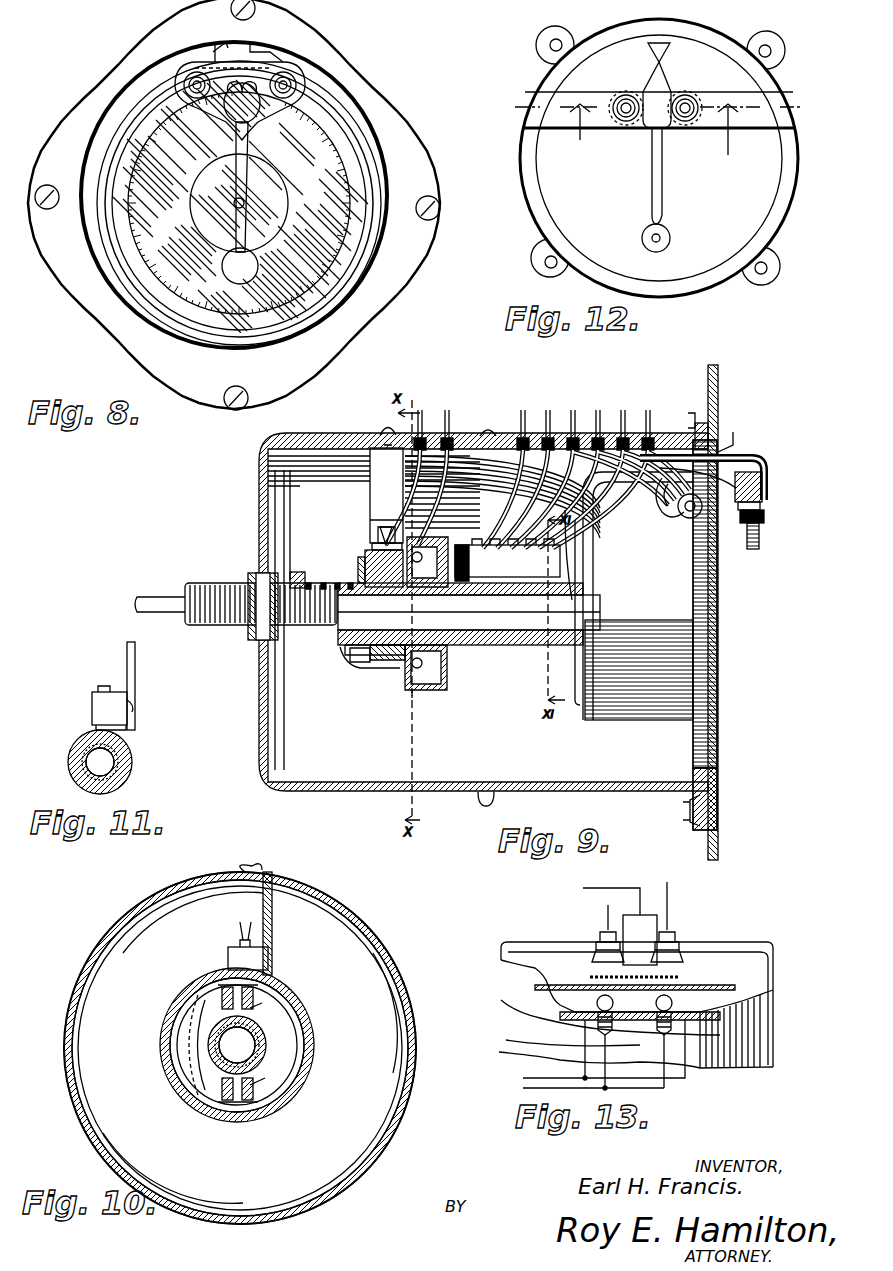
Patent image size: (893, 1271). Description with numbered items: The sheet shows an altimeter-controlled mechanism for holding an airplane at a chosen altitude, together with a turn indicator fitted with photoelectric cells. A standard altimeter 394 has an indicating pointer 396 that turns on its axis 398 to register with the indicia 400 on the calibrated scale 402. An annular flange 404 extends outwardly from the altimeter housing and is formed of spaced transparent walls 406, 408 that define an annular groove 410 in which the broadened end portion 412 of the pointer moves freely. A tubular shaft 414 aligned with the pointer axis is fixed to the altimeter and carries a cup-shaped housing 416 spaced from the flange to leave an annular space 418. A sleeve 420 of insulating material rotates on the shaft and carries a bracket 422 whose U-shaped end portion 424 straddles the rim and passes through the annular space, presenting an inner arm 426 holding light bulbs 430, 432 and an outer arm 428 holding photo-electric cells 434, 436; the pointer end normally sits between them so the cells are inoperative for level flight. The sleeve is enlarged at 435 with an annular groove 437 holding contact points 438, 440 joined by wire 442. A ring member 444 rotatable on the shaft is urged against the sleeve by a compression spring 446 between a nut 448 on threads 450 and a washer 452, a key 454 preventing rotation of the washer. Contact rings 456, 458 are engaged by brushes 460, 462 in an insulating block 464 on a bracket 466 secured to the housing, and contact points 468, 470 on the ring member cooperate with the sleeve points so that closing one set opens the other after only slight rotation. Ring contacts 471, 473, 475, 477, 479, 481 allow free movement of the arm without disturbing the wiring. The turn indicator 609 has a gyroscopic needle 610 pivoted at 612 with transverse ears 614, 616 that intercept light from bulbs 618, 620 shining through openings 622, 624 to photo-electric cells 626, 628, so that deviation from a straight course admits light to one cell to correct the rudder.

In FIG. 8, the altimeter 394 is at (276, 243).
In FIG. 9, the altimeter 394 is at (638, 596).
In FIG. 8, the indicating pointer 396 is at (246, 214).
In FIG. 9, the indicating pointer 396 is at (718, 600).
In FIG. 8, the axis 398 is at (239, 203).
In FIG. 9, the axis 398 is at (722, 620).
In FIG. 8, the indicia 400 is at (239, 203).
In FIG. 8, the calibrated scale 402 is at (345, 222).
In FIG. 8, the annular flange 404 is at (198, 340).
In FIG. 9, the annular flange 404 is at (718, 768).
In FIG. 9, the transparent wall 406 is at (692, 518).
In FIG. 9, the transparent wall 408 is at (759, 537).
In FIG. 9, the annular groove 410 is at (748, 470).
In FIG. 8, the broadened end portion 412 is at (272, 60).
In FIG. 9, the broadened end portion 412 is at (762, 485).
In FIG. 9, the tubular shaft 414 is at (562, 612).
In FIG. 11, the tubular shaft 414 is at (68, 760).
In FIG. 10, the tubular shaft 414 is at (255, 1045).
In FIG. 9, the cup-shaped housing 416 is at (385, 795).
In FIG. 8, the annular space 418 is at (375, 135).
In FIG. 9, the annular space 418 is at (705, 785).
In FIG. 9, the sleeve 420 is at (583, 585).
In FIG. 11, the sleeve 420 is at (132, 760).
In FIG. 9, the bracket 422 is at (583, 545).
In FIG. 9, the U-shaped end portion 424 is at (735, 465).
In FIG. 9, the inner arm 426 is at (690, 440).
In FIG. 9, the outer arm 428 is at (764, 517).
In FIG. 9, the electric light bulb 430 is at (748, 432).
In FIG. 9, the electric light bulb 432 is at (665, 515).
In FIG. 8, the photo-electric cell 434 is at (190, 73).
In FIG. 9, the photo-electric cell 434 is at (760, 505).
In FIG. 9, the enlargement 435 is at (447, 680).
In FIG. 8, the photo-electric cell 436 is at (292, 74).
In FIG. 9, the annular groove 437 is at (412, 587).
In FIG. 10, the annular groove 437 is at (314, 1030).
In FIG. 10, the contact point 438 is at (228, 957).
In FIG. 10, the contact point 440 is at (225, 1110).
In FIG. 10, the wire 442 is at (200, 1052).
In FIG. 9, the ring member 444 is at (370, 655).
In FIG. 9, the compression spring 446 is at (320, 583).
In FIG. 9, the nut 448 is at (296, 572).
In FIG. 9, the threads 450 is at (285, 642).
In FIG. 9, the washer 452 is at (368, 560).
In FIG. 9, the key 454 is at (360, 560).
In FIG. 9, the contact ring 456 is at (355, 662).
In FIG. 9, the contact ring 458 is at (355, 668).
In FIG. 9, the brush 460 is at (375, 545).
In FIG. 9, the brush 462 is at (405, 500).
In FIG. 9, the insulating block 464 is at (378, 530).
In FIG. 9, the bracket 466 is at (388, 428).
In FIG. 11, the bracket 466 is at (135, 672).
In FIG. 9, the contact point 468 is at (380, 650).
In FIG. 9, the contact point 470 is at (415, 690).
In FIG. 10, the contact point 470 is at (245, 1110).
In FIG. 9, the ring contact 471 is at (462, 585).
In FIG. 9, the ring contact 473 is at (472, 598).
In FIG. 9, the ring contact 475 is at (478, 585).
In FIG. 9, the ring contact 477 is at (515, 598).
In FIG. 9, the ring contact 479 is at (513, 567).
In FIG. 9, the ring contact 481 is at (507, 560).
In FIG. 11, the ring contact 481 is at (127, 725).
In FIG. 12, the turn indicator 609 is at (659, 158).
In FIG. 13, the turn indicator 609 is at (648, 996).
In FIG. 12, the needle 610 is at (653, 178).
In FIG. 13, the needle 610 is at (620, 930).
In FIG. 12, the pivot 612 is at (660, 237).
In FIG. 12, the ear 614 is at (640, 95).
In FIG. 13, the ear 614 is at (590, 977).
In FIG. 12, the ear 616 is at (675, 95).
In FIG. 13, the ear 616 is at (700, 985).
In FIG. 13, the bulb 618 is at (615, 1005).
In FIG. 13, the bulb 620 is at (604, 1055).
In FIG. 13, the opening 622 is at (597, 1003).
In FIG. 13, the opening 624 is at (672, 1003).
In FIG. 12, the photo-electric cell 626 is at (626, 121).
In FIG. 13, the photo-electric cell 626 is at (596, 938).
In FIG. 12, the photo-electric cell 628 is at (689, 121).
In FIG. 13, the photo-electric cell 628 is at (685, 940).